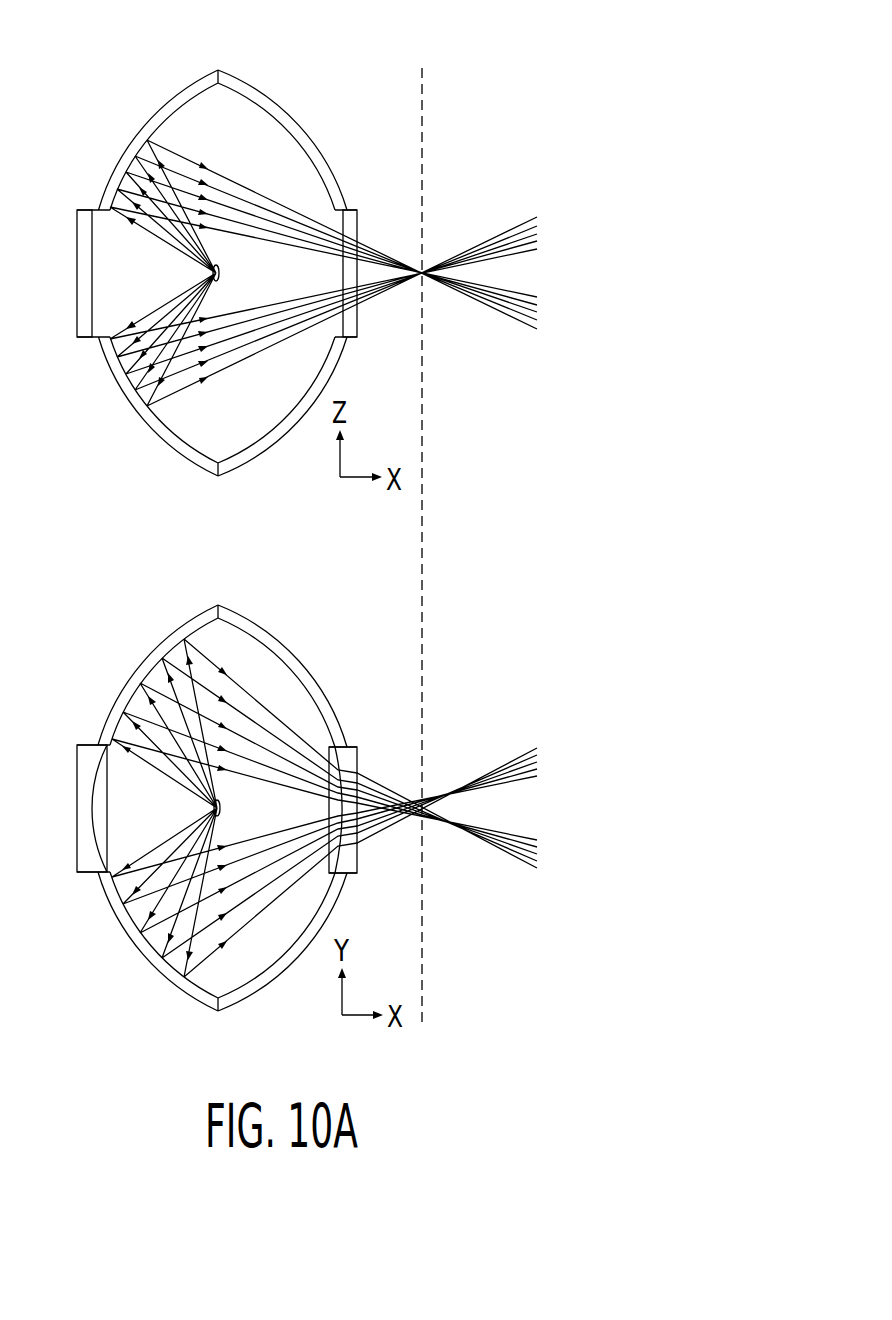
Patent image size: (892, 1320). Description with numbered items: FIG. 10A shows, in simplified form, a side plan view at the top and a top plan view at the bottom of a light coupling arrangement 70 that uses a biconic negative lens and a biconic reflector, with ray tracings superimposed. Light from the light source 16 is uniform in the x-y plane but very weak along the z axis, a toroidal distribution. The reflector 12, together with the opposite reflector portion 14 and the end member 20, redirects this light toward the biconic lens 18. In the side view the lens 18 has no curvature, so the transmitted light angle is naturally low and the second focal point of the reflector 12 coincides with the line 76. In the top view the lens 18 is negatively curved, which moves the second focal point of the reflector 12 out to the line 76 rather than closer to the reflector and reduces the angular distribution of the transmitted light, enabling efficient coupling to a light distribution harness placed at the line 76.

The reflector 12 is at (156, 103).
The second reflector portion 14 is at (313, 135).
The light source 16 is at (222, 272).
The biconic lens 18 is at (358, 223).
The end plate 20 is at (77, 227).
The arrangement 70 is at (226, 526).
The line 76 is at (423, 146).